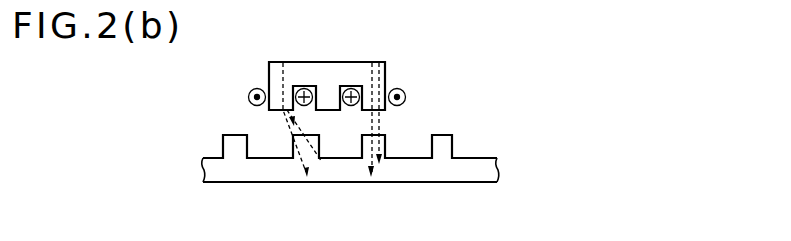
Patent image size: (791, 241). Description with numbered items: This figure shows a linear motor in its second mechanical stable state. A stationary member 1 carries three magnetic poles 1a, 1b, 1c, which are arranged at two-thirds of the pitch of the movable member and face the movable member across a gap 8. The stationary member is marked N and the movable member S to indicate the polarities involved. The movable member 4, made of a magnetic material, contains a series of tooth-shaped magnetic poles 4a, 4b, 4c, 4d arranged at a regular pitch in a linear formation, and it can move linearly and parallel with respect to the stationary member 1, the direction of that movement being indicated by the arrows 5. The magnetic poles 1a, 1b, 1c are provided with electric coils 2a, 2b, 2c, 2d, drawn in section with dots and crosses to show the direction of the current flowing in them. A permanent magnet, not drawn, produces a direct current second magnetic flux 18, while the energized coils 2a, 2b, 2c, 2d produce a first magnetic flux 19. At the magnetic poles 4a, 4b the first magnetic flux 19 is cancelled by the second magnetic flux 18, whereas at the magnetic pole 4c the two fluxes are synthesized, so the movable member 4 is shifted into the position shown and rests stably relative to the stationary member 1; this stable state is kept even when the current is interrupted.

The stationary member 1 is at (313, 62).
The magnetic pole of stationary member 1a is at (280, 110).
The magnetic pole of stationary member 1b is at (330, 110).
The magnetic pole of stationary member 1c is at (384, 110).
The electric coil 2a is at (252, 90).
The electric coil 2b is at (302, 88).
The electric coil 2c is at (352, 88).
The electric coil 2d is at (404, 91).
The movable member 4 is at (418, 172).
The magnetic pole of movable member 4a is at (224, 138).
The magnetic pole of movable member 4b is at (293, 148).
The magnetic pole of movable member 4c is at (385, 147).
The magnetic pole of movable member 4d is at (452, 147).
The direction of movement 5 is at (340, 36).
The gap 8 is at (361, 125).
The second magnetic flux 18 is at (305, 182).
The first magnetic flux 19 is at (322, 163).
The north pole N is at (330, 47).
The south pole S is at (327, 202).